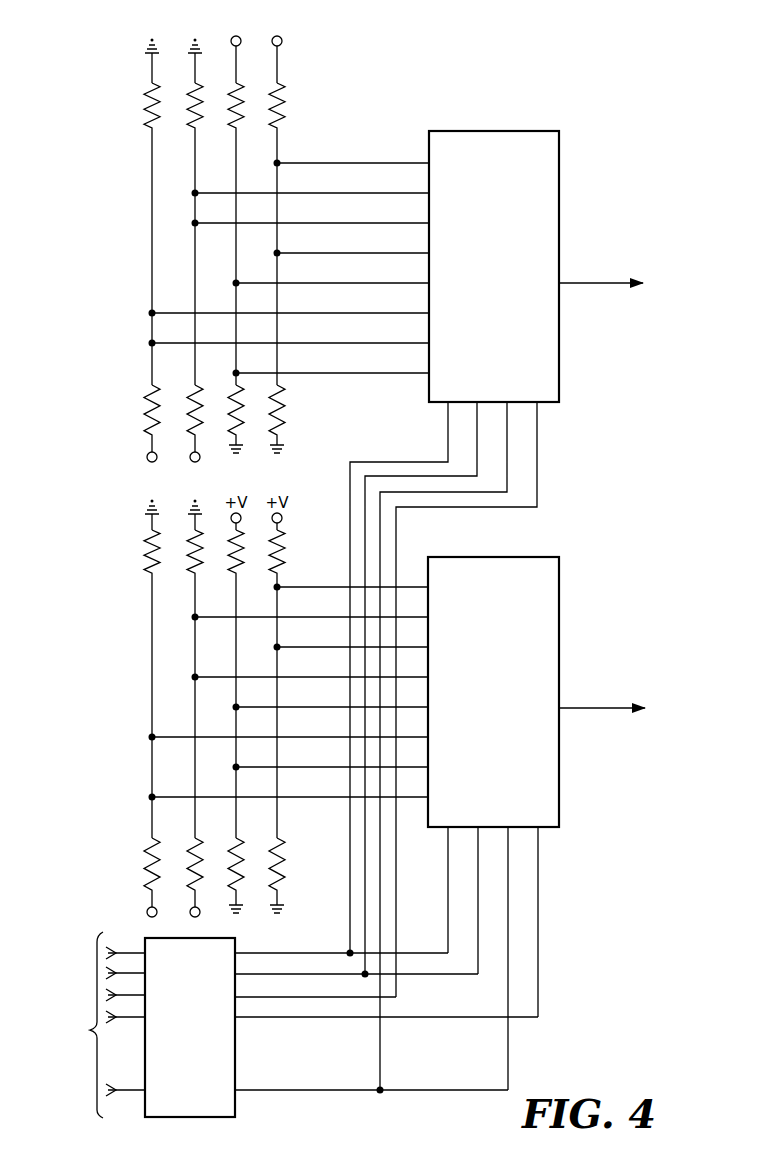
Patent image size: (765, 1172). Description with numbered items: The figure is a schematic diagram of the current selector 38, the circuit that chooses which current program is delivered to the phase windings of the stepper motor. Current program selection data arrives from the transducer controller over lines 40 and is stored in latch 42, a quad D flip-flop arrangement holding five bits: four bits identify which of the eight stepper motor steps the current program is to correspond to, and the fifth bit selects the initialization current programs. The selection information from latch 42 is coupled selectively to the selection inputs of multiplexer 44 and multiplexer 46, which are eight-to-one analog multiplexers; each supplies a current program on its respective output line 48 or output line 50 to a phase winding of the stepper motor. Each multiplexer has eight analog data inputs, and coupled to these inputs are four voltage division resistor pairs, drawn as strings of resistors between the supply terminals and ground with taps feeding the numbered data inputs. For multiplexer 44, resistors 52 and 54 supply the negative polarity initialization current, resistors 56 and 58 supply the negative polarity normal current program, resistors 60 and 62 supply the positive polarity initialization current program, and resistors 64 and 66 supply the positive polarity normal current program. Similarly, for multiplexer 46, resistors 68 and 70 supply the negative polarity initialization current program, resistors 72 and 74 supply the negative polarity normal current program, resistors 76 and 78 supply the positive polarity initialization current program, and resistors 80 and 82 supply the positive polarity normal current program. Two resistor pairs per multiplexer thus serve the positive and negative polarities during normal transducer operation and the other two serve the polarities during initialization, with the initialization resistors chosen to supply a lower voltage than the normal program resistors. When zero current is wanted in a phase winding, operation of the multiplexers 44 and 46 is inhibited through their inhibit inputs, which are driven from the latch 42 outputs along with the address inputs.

The current selector 38 is at (122, 238).
The lines 40 is at (92, 1025).
The latch 42 is at (237, 1113).
The multiplexer 44 is at (486, 127).
The multiplexer 46 is at (560, 580).
The output line 48 is at (598, 282).
The output line 50 is at (606, 712).
The resistor 52 is at (150, 115).
The resistor 54 is at (148, 403).
The resistor 56 is at (193, 116).
The resistor 58 is at (190, 406).
The resistor 60 is at (238, 114).
The resistor 62 is at (240, 401).
The resistor 64 is at (283, 113).
The resistor 66 is at (284, 406).
The resistor 68 is at (151, 566).
The resistor 70 is at (150, 845).
The resistor 72 is at (192, 565).
The resistor 74 is at (190, 858).
The resistor 76 is at (238, 560).
The resistor 78 is at (239, 850).
The resistor 80 is at (283, 546).
The resistor 82 is at (284, 856).